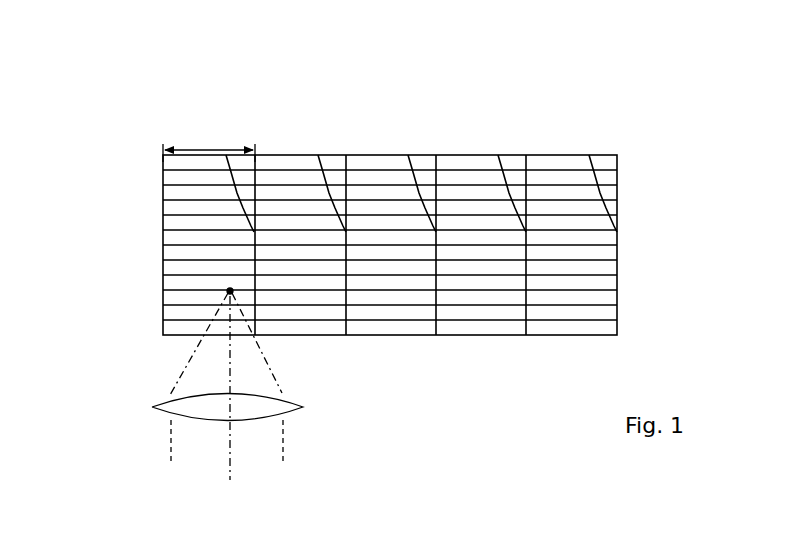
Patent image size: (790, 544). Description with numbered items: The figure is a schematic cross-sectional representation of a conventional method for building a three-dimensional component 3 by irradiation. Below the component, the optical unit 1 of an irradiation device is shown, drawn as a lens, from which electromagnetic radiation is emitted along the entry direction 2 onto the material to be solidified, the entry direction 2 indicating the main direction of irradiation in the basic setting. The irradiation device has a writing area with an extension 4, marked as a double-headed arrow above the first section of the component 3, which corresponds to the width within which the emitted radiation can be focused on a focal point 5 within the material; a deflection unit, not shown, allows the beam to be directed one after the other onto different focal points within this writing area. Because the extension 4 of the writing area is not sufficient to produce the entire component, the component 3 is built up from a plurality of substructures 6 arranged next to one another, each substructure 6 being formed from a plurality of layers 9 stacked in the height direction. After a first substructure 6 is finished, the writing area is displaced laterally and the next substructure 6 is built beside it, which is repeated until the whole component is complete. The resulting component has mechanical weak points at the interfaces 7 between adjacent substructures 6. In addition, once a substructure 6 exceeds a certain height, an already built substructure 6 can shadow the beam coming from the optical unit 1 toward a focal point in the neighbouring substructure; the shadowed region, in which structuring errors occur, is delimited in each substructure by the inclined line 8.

The optical unit 1 is at (314, 407).
The entry direction 2 is at (225, 450).
The component 3 is at (97, 133).
The extension 4 is at (200, 150).
The focal point 5 is at (227, 292).
The substructure 6 is at (217, 133).
The interface 7 is at (436, 313).
The line 8 is at (237, 193).
The layer 9 is at (607, 282).